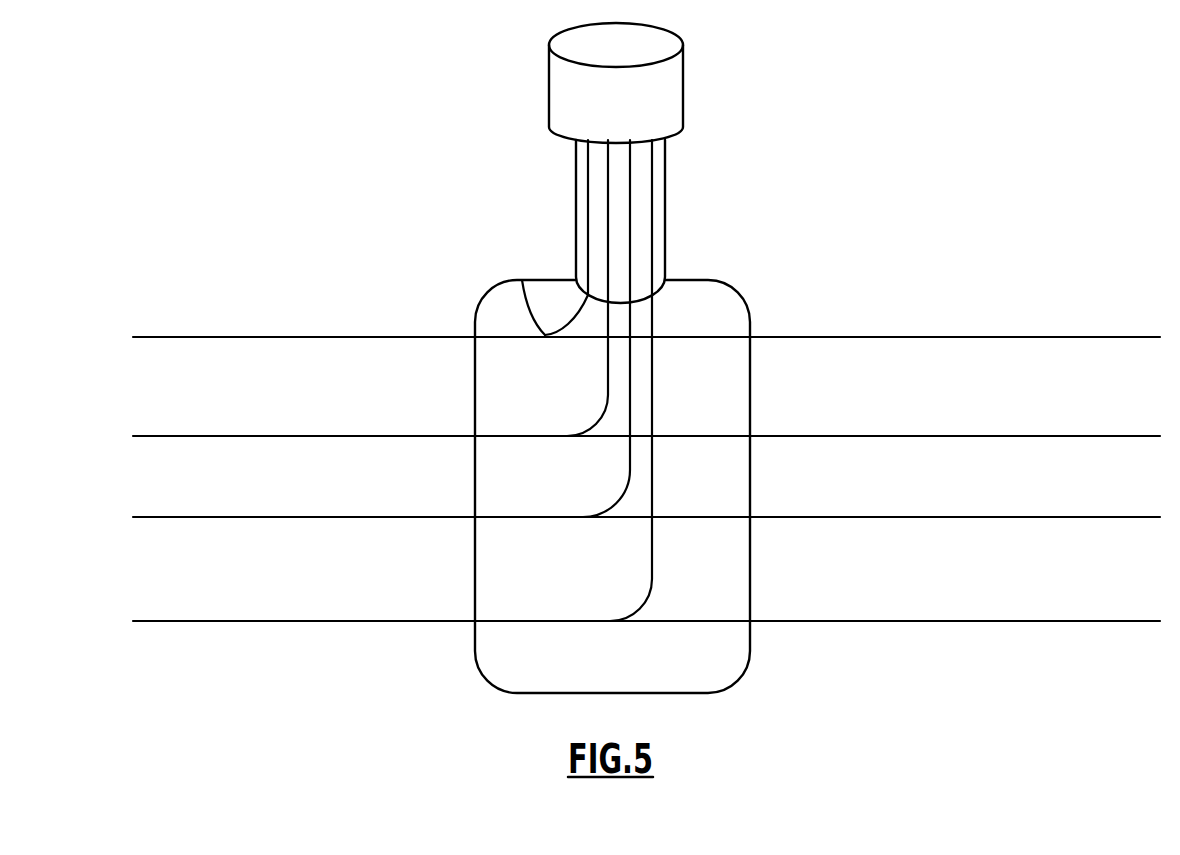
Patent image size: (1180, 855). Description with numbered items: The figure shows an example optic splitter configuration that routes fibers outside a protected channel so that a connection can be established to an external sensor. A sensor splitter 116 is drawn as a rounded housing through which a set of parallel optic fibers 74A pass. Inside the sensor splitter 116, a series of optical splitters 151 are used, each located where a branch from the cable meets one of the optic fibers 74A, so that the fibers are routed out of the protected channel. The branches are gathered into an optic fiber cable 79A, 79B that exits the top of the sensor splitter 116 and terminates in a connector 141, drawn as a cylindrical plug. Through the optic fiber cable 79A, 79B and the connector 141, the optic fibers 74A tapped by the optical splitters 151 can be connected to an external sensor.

The connector 141 is at (695, 63).
The optic fiber cable 79A is at (653, 219).
The optic fiber cable 79B is at (609, 380).
The sensor splitter 116 is at (746, 302).
The optical splitter 151 is at (522, 280).
The optic fibers 74A is at (110, 303).